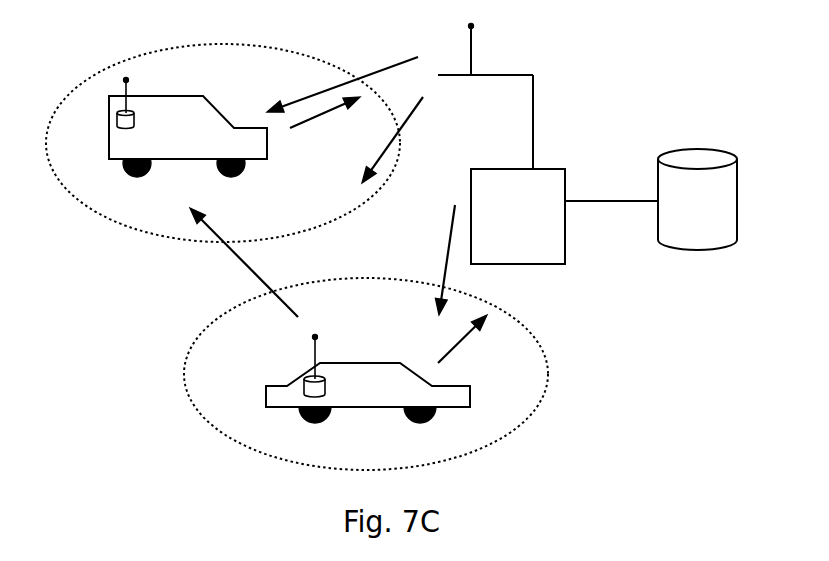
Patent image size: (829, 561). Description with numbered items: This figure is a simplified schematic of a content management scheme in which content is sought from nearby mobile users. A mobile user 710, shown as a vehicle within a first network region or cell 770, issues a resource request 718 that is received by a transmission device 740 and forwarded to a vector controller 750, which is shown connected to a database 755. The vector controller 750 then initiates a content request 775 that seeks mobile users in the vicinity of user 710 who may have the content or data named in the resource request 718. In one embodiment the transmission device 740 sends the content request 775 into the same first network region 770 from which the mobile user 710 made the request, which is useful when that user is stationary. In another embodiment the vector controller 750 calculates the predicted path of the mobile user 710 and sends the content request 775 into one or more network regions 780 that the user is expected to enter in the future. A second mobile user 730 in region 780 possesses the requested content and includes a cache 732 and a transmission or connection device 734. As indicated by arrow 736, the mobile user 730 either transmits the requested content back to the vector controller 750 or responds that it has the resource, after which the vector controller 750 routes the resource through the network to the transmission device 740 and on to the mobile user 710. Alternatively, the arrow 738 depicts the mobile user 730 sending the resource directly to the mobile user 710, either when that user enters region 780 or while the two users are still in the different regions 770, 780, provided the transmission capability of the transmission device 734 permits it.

The mobile user 710 is at (155, 96).
The resource request 718 is at (303, 122).
The mobile user 730 is at (365, 409).
The cache 732 is at (304, 386).
The transmission device 734 is at (318, 337).
The arrow 736 is at (463, 343).
The vehicle-to-vehicle communication 738 is at (245, 265).
The transmission device 740 is at (472, 53).
The vector controller 750 is at (564, 216).
The database 755 is at (697, 199).
The first network region 770 is at (173, 241).
The content request 775 is at (386, 70).
The network region 780 is at (550, 375).